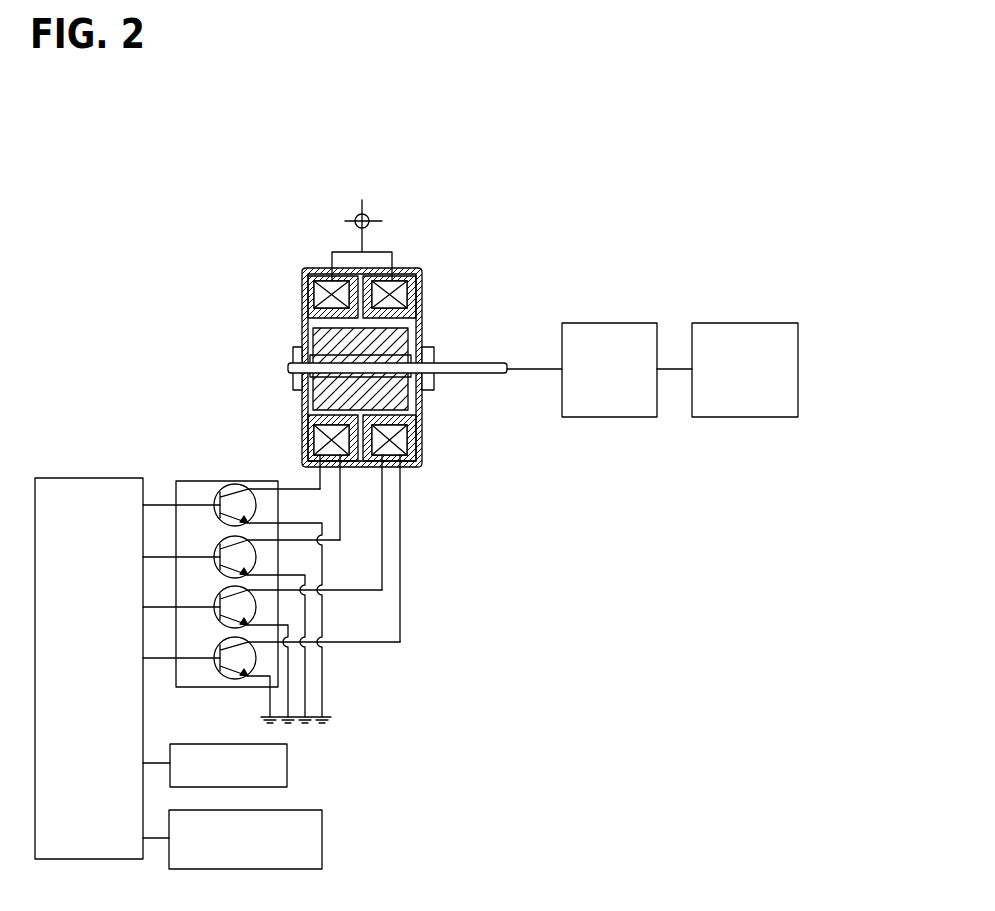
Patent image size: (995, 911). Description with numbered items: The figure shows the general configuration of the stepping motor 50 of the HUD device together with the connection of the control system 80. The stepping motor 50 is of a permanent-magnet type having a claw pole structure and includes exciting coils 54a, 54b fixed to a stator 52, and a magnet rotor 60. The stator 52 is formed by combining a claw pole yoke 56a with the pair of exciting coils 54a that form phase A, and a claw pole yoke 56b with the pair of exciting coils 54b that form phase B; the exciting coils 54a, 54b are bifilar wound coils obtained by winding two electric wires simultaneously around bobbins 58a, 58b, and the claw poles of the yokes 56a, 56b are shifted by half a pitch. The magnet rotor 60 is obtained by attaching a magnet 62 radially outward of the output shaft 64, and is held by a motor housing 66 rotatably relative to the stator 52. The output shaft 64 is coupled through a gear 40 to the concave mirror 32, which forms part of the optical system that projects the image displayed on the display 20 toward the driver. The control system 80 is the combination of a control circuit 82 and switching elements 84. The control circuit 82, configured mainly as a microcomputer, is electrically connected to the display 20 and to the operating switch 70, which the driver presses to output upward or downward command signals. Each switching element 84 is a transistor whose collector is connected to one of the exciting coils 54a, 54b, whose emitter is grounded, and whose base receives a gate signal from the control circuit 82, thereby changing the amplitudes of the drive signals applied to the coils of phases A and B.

The display 20 is at (287, 763).
The concave mirror 32 is at (735, 323).
The gear 40 is at (598, 323).
The stepping motor 50 is at (356, 408).
The stator 52 is at (315, 268).
The exciting coils 54a is at (315, 297).
The exciting coils 54b is at (410, 286).
The claw pole yoke 56a is at (305, 397).
The claw pole yoke 56b is at (417, 410).
The bobbin 58a is at (308, 437).
The bobbin 58b is at (423, 435).
The magnet rotor 60 is at (310, 332).
The magnet 62 is at (403, 397).
The output shaft 64 is at (460, 363).
The motor housing 66 is at (305, 277).
The operating switch 70 is at (322, 838).
The control system 80 is at (217, 618).
The control circuit 82 is at (72, 478).
The switching element 84 is at (271, 577).